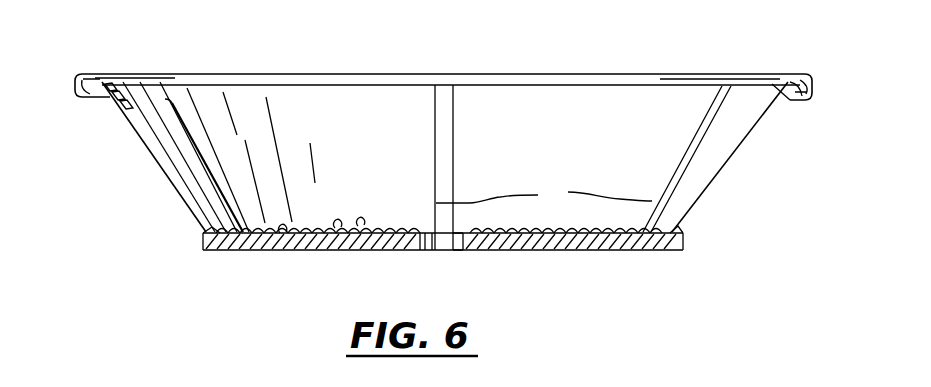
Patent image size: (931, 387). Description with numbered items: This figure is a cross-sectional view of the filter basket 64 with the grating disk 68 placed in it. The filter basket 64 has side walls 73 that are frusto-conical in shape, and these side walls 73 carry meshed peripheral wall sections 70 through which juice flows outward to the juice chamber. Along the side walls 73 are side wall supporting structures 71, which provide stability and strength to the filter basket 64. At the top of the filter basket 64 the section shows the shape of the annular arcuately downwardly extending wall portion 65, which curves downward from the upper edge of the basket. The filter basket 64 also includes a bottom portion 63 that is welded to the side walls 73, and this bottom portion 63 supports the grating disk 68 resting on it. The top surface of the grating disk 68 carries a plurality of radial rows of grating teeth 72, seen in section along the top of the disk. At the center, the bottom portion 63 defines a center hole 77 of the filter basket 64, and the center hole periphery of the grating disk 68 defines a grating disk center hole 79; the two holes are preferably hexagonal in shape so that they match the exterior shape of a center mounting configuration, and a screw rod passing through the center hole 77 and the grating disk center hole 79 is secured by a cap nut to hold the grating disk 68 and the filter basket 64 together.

The bottom portion 63 is at (228, 248).
The filter basket 64 is at (737, 77).
The annular arcuately downwardly extending wall portion 65 is at (815, 88).
The grating disk 68 is at (396, 231).
The meshed peripheral wall sections 70 is at (348, 148).
The side wall supporting structures 71 is at (205, 147).
The grating teeth 72 is at (354, 236).
The side walls 73 is at (718, 165).
The center hole of the filter basket 77 is at (432, 251).
The grating disk center hole 79 is at (453, 251).